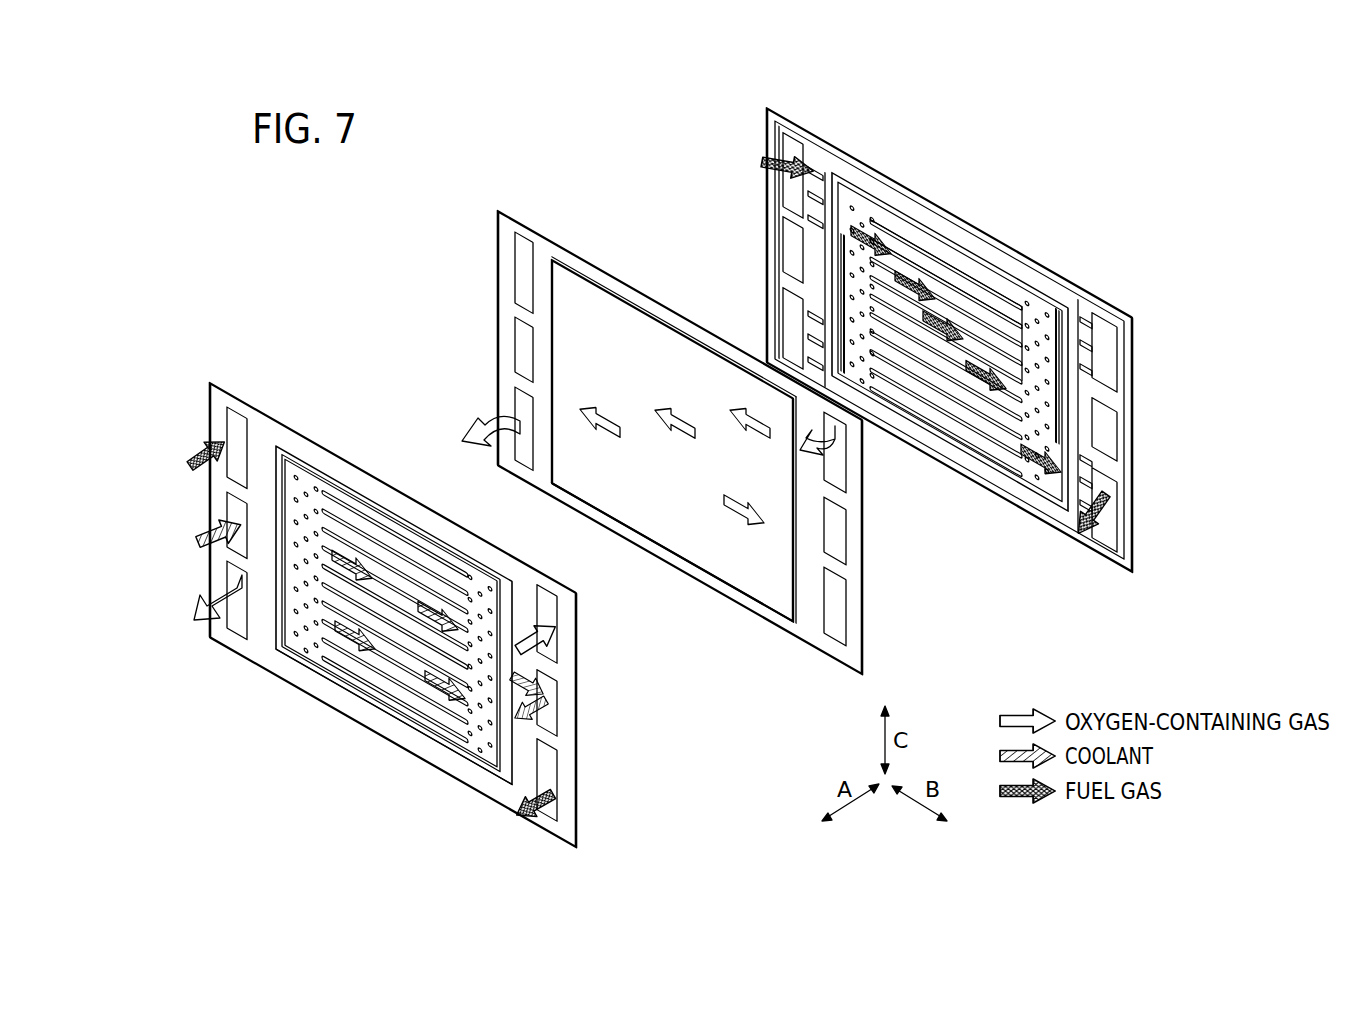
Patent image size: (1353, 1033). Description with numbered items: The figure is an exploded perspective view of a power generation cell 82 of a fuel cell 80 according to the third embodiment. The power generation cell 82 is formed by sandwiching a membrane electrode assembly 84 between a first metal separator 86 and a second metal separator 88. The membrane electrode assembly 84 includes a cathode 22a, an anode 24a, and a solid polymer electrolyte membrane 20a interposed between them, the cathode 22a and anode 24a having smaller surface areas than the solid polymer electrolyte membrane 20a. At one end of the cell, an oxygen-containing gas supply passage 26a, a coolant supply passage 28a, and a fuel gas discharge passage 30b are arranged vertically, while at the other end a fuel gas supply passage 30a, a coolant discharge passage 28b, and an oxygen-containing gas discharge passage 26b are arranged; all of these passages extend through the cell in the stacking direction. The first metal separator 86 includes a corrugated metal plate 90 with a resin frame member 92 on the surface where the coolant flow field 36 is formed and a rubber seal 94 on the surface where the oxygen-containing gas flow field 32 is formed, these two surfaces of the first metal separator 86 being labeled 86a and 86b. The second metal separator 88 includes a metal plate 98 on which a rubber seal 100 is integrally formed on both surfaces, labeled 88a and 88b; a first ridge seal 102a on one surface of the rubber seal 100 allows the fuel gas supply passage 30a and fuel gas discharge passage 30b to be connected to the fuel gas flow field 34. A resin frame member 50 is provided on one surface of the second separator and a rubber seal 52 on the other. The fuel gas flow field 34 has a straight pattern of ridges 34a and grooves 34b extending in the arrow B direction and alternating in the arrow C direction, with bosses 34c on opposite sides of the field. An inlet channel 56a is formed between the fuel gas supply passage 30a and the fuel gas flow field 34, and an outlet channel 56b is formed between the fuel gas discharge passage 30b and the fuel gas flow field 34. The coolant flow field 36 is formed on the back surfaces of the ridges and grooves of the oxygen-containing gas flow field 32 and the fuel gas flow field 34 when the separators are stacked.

The fuel cell 80 is at (313, 327).
The power generation cell 82 is at (269, 327).
The membrane electrode assembly 84 is at (497, 207).
The first metal separator 86 is at (209, 381).
The second metal separator 88 is at (765, 106).
The solid polymer electrolyte membrane 20a is at (856, 570).
The cathode 22a is at (712, 545).
The anode 24a is at (605, 345).
The oxygen-containing gas supply passage 26a is at (551, 640).
The oxygen-containing gas discharge passage 26b is at (229, 583).
The coolant supply passage 28a is at (551, 695).
The coolant discharge passage 28b is at (229, 516).
The fuel gas supply passage 30a is at (228, 430).
The fuel gas discharge passage 30b is at (551, 765).
The oxygen-containing gas flow field 32 is at (407, 552).
The fuel gas flow field 34 is at (1012, 329).
The ridges 34a is at (930, 265).
The grooves 34b is at (970, 282).
The bosses 34c is at (863, 222).
The coolant flow field 36 is at (338, 655).
The resin frame member 50 is at (1135, 447).
The rubber seal 52 is at (1133, 417).
The inlet channel 56a is at (812, 198).
The outlet channel 56b is at (1084, 481).
The surface of first separator 86a is at (497, 792).
The surface of first separator 86b is at (470, 767).
The surface of second separator 88a is at (1020, 493).
The surface of second separator 88b is at (1041, 517).
The corrugated metal plate 90 is at (414, 713).
The resin frame member 92 is at (385, 722).
The rubber seal 94 is at (483, 533).
The metal plate 98 is at (981, 443).
The rubber seal 100 is at (928, 456).
The first ridge seal 102a is at (1018, 317).